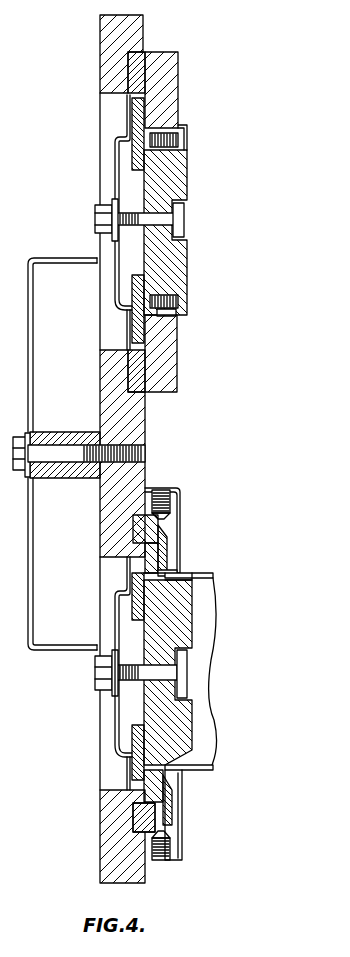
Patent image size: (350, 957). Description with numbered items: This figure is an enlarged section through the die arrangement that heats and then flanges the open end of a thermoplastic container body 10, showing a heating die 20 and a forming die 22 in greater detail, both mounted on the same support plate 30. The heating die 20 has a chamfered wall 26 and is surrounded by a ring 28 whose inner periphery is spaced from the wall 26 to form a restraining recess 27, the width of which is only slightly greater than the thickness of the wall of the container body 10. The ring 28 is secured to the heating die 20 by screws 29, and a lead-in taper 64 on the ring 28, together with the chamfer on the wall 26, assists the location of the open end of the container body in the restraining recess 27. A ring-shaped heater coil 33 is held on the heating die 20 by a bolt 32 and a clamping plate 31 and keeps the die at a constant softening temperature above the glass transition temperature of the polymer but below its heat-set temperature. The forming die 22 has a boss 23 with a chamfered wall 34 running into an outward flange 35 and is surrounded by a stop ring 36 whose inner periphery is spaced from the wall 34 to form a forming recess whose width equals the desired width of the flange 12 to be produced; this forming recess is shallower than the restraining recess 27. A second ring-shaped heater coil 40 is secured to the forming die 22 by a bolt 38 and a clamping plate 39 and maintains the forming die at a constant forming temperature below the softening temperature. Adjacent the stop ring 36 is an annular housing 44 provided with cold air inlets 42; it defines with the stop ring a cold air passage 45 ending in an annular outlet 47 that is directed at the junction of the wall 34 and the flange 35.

The container body 10 is at (213, 768).
The flange 12 is at (133, 576).
The heating die 20 is at (187, 150).
The forming die 22 is at (168, 785).
The boss 23 is at (192, 712).
The chamfered wall 26 is at (182, 130).
The restraining recess 27 is at (168, 320).
The ring 28 is at (174, 77).
The screws 29 is at (172, 149).
The support plate 30 is at (108, 52).
The clamping plate 31 is at (118, 258).
The bolt 32 is at (182, 218).
The heater coil 33 is at (133, 114).
The chamfered wall 34 is at (175, 583).
The outward flange 35 is at (143, 560).
The stop ring 36 is at (162, 530).
The bolt 38 is at (183, 672).
The clamping plate 39 is at (118, 705).
The heater coil 40 is at (135, 772).
The cold air inlets 42 is at (160, 488).
The annular housing 44 is at (175, 513).
The cold air passage 45 is at (170, 548).
The annular outlet 47 is at (168, 574).
The lead-in taper 64 is at (176, 313).